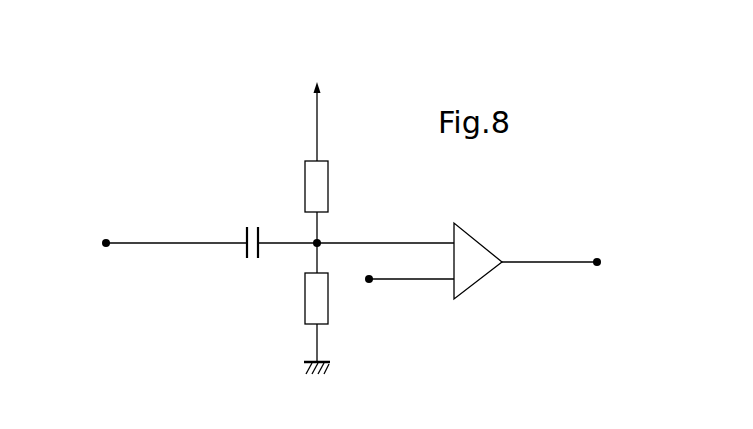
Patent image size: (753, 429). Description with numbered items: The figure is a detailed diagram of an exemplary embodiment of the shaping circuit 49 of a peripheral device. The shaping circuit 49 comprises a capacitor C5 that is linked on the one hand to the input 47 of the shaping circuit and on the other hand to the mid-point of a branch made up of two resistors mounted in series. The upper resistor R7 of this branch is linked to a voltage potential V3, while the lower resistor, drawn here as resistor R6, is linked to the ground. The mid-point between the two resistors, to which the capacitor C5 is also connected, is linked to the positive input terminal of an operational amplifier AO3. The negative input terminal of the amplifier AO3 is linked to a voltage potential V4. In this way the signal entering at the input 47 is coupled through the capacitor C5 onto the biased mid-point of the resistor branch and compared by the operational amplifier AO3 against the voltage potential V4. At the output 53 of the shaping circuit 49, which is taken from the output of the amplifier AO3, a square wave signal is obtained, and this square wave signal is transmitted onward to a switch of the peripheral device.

The input 47 is at (106, 240).
The shaping circuit 49 is at (203, 123).
The output 53 is at (598, 257).
The capacitor C5 is at (250, 231).
The resistor R7 is at (329, 186).
The resistor R6 is at (303, 298).
The voltage potential V3 is at (317, 110).
The voltage potential V4 is at (405, 292).
The operational amplifier AO3 is at (484, 261).